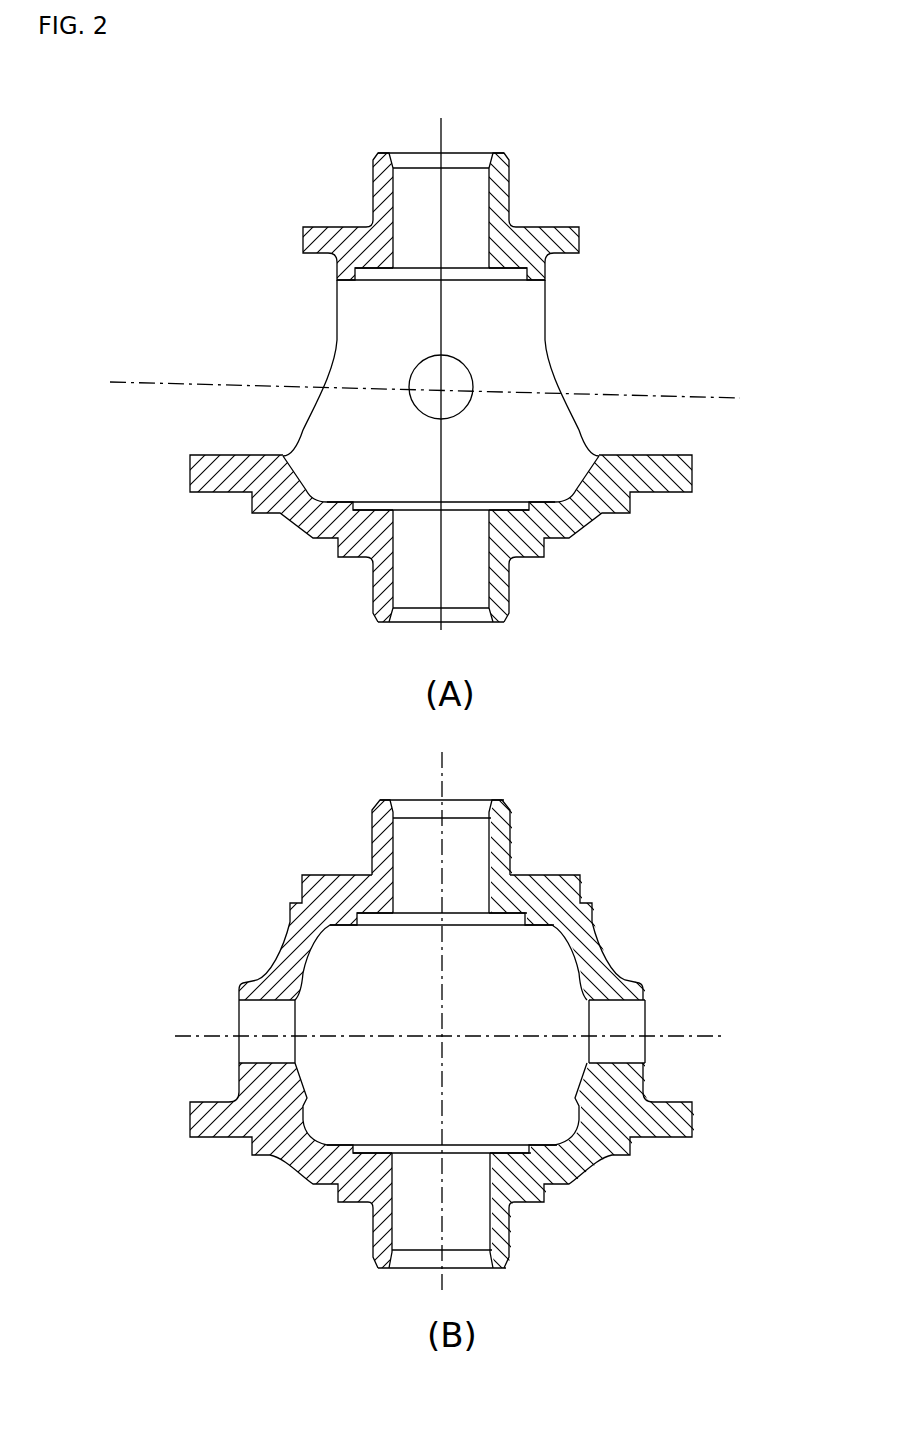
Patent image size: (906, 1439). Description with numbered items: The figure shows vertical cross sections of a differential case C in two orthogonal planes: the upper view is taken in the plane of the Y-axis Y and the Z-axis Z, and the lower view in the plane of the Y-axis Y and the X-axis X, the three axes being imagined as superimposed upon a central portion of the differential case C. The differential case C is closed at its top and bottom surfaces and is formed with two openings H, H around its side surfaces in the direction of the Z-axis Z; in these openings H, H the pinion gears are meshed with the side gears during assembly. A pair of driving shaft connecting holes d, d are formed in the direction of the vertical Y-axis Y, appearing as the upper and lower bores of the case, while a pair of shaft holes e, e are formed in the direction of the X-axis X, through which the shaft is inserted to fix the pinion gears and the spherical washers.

The driving shaft connecting hole d is at (492, 186).
The differential case C is at (533, 232).
The opening H is at (326, 326).
The shaft hole e is at (428, 412).
The X-axis X is at (463, 700).
The Y-axis Y is at (440, 688).
The Z-axis Z is at (435, 709).